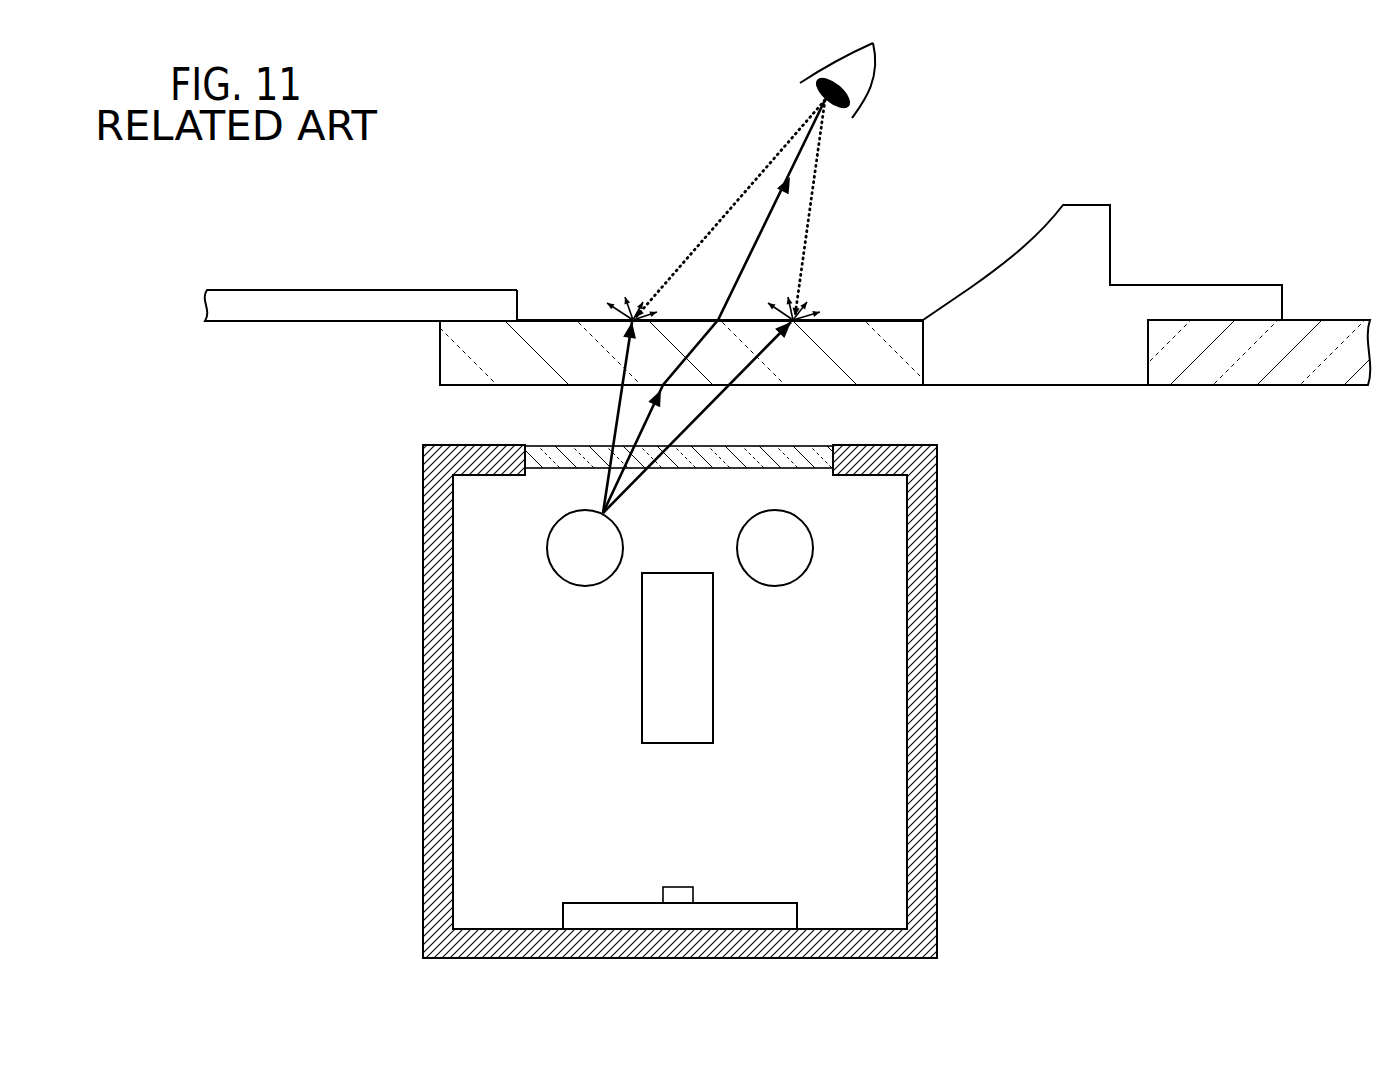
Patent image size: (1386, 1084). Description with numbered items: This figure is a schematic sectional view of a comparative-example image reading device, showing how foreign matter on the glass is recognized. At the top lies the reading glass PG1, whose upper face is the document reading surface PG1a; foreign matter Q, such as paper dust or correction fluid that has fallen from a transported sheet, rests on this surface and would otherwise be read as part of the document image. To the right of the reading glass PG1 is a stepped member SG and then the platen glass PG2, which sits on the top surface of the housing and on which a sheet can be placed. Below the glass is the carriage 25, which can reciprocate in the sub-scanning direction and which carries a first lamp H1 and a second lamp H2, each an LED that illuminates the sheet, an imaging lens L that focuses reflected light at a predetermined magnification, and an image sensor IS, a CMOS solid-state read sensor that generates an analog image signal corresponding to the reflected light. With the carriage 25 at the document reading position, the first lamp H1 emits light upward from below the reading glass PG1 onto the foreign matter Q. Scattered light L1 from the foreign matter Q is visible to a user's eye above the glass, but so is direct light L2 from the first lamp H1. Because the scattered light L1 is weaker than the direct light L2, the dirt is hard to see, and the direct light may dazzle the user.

The reading glass PG1 is at (563, 333).
The document reading surface PG1a is at (870, 318).
The foreign matter Q is at (790, 310).
The scattered light L1 is at (746, 208).
The direct light L2 is at (714, 306).
The step portion SG is at (1090, 220).
The platen glass PG2 is at (1308, 335).
The carriage 25 is at (942, 556).
The first lamp H1 is at (578, 562).
The second lamp H2 is at (779, 562).
The imaging lens L is at (667, 648).
The image sensor IS is at (683, 900).